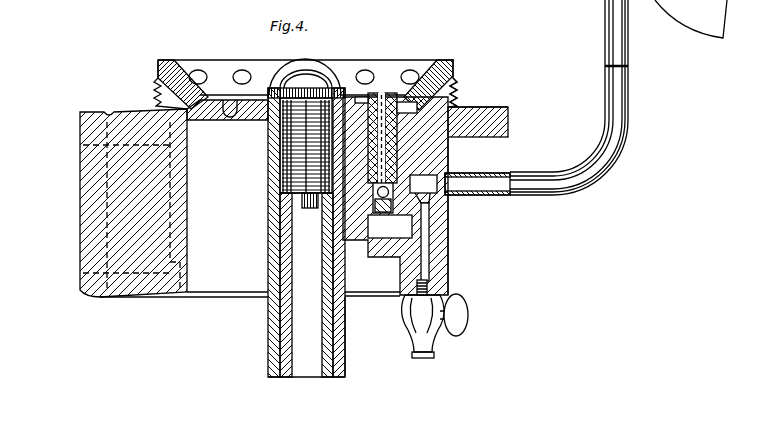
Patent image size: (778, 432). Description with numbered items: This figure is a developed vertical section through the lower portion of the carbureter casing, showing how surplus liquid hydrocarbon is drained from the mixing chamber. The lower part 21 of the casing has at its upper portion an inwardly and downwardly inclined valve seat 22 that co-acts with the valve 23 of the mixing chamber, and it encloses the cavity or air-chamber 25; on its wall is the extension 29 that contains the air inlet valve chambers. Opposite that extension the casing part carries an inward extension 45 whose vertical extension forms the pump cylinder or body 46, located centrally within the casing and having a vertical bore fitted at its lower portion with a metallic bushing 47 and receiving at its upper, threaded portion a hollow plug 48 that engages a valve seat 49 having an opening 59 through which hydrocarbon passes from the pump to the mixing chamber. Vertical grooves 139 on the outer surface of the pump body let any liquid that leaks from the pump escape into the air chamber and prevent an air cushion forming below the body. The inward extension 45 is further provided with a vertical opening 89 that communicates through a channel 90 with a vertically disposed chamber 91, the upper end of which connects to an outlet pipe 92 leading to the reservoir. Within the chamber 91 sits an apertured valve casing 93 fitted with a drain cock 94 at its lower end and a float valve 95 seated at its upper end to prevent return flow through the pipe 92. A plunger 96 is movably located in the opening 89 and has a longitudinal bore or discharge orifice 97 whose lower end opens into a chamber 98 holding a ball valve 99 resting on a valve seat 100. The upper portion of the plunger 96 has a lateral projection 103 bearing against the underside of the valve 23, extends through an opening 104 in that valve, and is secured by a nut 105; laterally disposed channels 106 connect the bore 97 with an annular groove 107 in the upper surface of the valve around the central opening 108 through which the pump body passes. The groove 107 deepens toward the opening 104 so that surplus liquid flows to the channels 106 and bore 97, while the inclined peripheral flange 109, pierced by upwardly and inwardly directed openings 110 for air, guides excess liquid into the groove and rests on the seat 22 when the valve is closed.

The part of the casing 21 is at (452, 229).
The valve seat 22 is at (155, 92).
The valve 23 is at (250, 121).
The cavity or air-chamber 25 is at (157, 203).
The extension 29 is at (140, 296).
The inward extension 45 is at (395, 196).
The pump cylinder or body 46 is at (268, 242).
The metallic bushing 47 is at (294, 378).
The hollow plug 48 is at (330, 72).
The valve seat 49 is at (303, 208).
The opening 59 is at (270, 277).
The vertical opening 89 is at (448, 149).
The channel 90 is at (390, 226).
The opening or chamber 91 is at (443, 213).
The outlet pipe 92 is at (613, 99).
The apertured valve casing 93 is at (448, 269).
The drain cock 94 is at (468, 319).
The float valve 95 is at (483, 174).
The plunger 96 is at (508, 118).
The bore or discharge orifice 97 is at (379, 92).
The chamber 98 is at (448, 167).
The ball valve 99 is at (373, 191).
The valve seat 100 is at (324, 247).
The lateral projection 103 is at (500, 109).
The opening 104 is at (462, 97).
The nut 105 is at (354, 95).
The laterally disposed channels 106 is at (384, 92).
The annular groove 107 is at (234, 108).
The central opening 108 is at (268, 88).
The flange 109 is at (160, 68).
The openings 110 is at (240, 70).
The grooves 139 is at (352, 327).